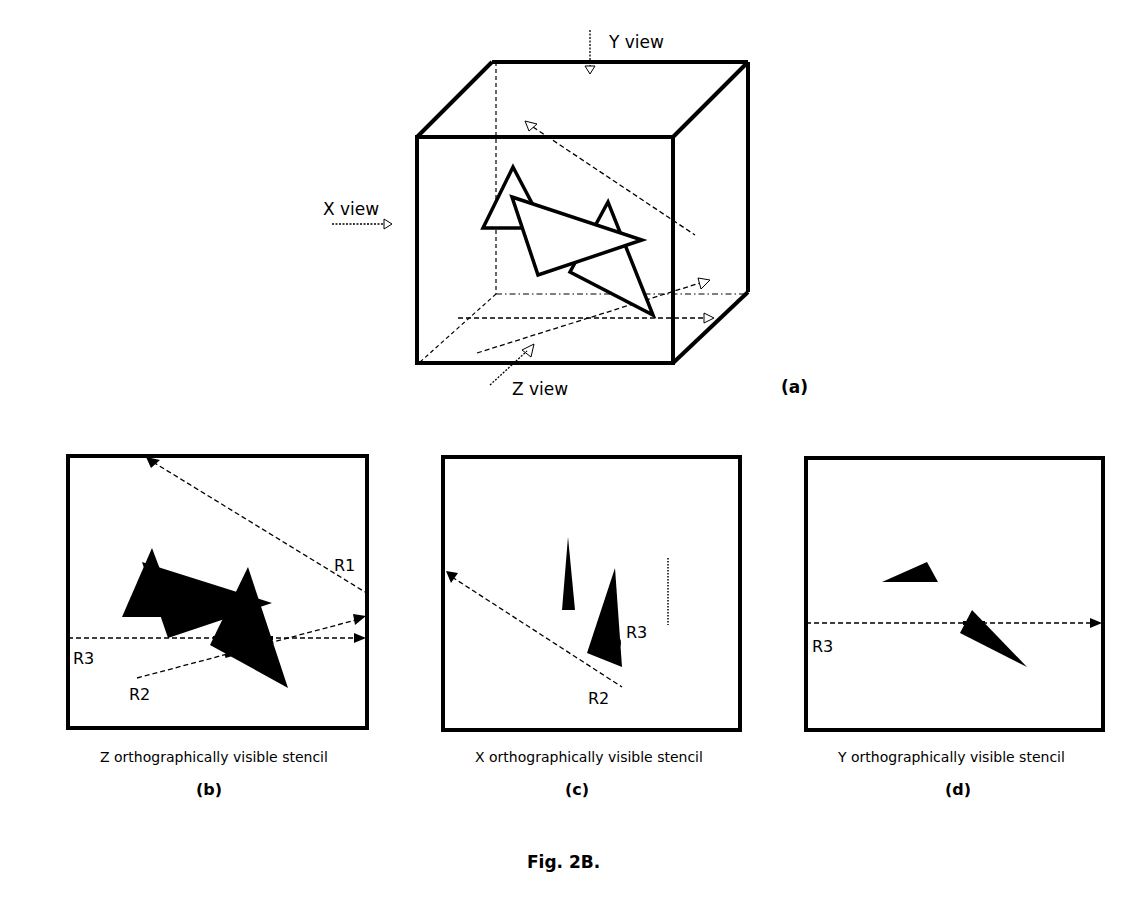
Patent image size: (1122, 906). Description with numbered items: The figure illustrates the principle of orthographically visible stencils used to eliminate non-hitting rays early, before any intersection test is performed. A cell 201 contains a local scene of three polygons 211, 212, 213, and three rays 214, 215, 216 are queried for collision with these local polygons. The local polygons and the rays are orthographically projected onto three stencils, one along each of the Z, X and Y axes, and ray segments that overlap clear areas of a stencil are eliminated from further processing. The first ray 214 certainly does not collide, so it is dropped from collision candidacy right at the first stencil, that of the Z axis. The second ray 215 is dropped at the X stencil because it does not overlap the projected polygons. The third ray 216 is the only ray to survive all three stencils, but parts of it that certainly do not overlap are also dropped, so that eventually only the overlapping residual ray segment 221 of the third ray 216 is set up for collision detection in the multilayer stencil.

The cell 201 is at (754, 126).
The local polygon 211 is at (498, 197).
The local polygon 212 is at (552, 252).
The local polygon 213 is at (603, 205).
The ray R1 214 is at (684, 222).
The ray R2 215 is at (556, 328).
The ray R3 216 is at (482, 317).
The residual ray segment 221 is at (981, 613).